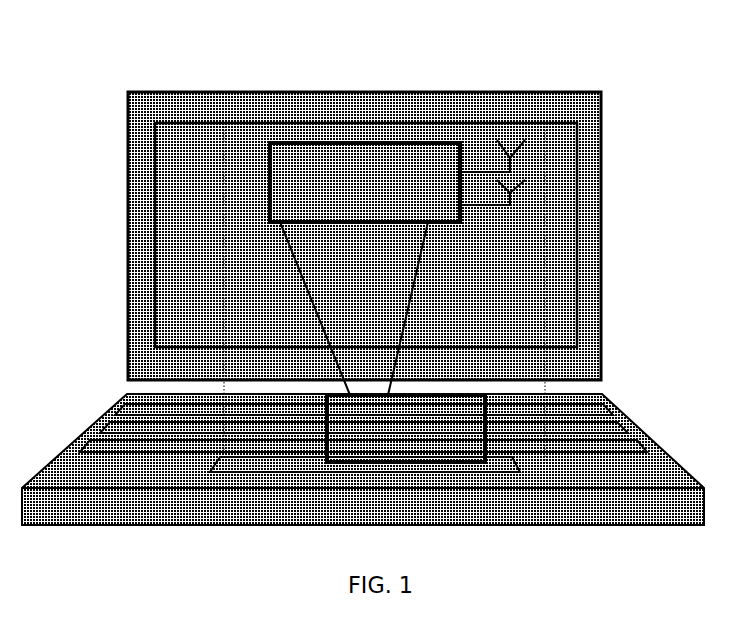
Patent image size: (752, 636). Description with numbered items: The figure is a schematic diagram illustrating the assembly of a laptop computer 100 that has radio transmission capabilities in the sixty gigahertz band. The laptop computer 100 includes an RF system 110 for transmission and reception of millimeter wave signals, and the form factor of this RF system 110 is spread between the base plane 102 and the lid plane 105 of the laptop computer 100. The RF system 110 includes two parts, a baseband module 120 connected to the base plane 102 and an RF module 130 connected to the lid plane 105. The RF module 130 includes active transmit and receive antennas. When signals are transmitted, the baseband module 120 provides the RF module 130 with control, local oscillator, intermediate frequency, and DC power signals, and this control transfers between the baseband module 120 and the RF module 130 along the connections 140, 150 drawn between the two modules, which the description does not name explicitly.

The laptop computer 100 is at (370, 282).
The base plane 102 is at (370, 459).
The lid plane 105 is at (364, 263).
The RF system 110 is at (223, 265).
The baseband module 120 is at (327, 415).
The RF module 130 is at (269, 153).
The connection between RF module and IF module 140 is at (287, 250).
The connection between RF module and IF module 150 is at (422, 238).